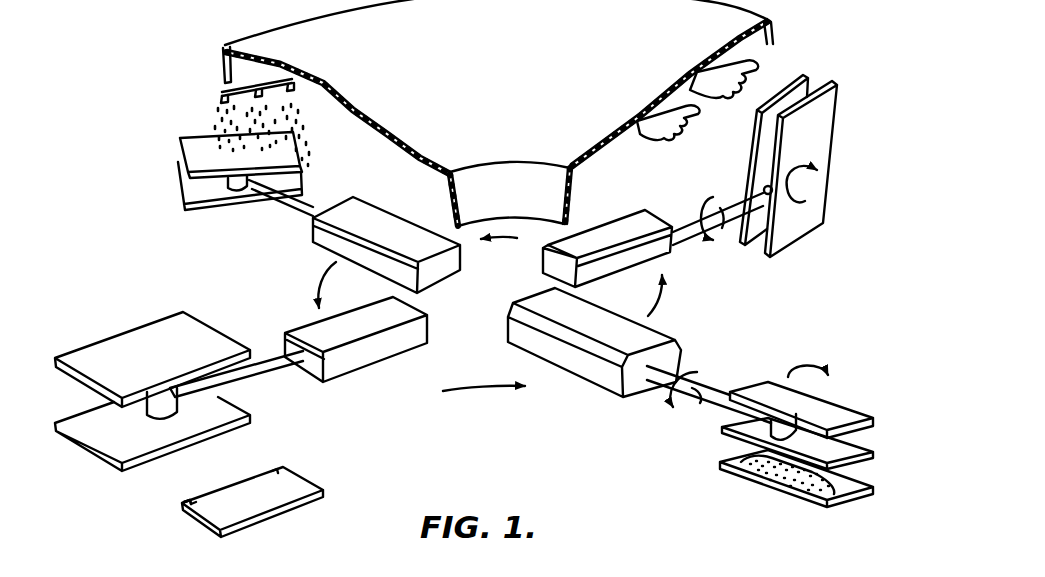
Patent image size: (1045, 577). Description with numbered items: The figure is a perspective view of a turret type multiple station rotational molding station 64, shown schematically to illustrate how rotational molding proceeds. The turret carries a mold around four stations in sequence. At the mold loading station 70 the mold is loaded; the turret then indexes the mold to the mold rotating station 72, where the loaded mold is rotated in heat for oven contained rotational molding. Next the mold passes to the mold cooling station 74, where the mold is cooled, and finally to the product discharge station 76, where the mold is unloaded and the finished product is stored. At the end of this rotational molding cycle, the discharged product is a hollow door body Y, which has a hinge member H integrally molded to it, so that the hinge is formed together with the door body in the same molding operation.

The turret type multiple station rotational molding station 64 is at (455, 346).
The mold loading station 70 is at (873, 396).
The mold rotating station 72 is at (838, 158).
The mold cooling station 74 is at (168, 127).
The product discharge station 76 is at (128, 302).
The hinge member H is at (192, 502).
The hollow door body Y is at (257, 502).